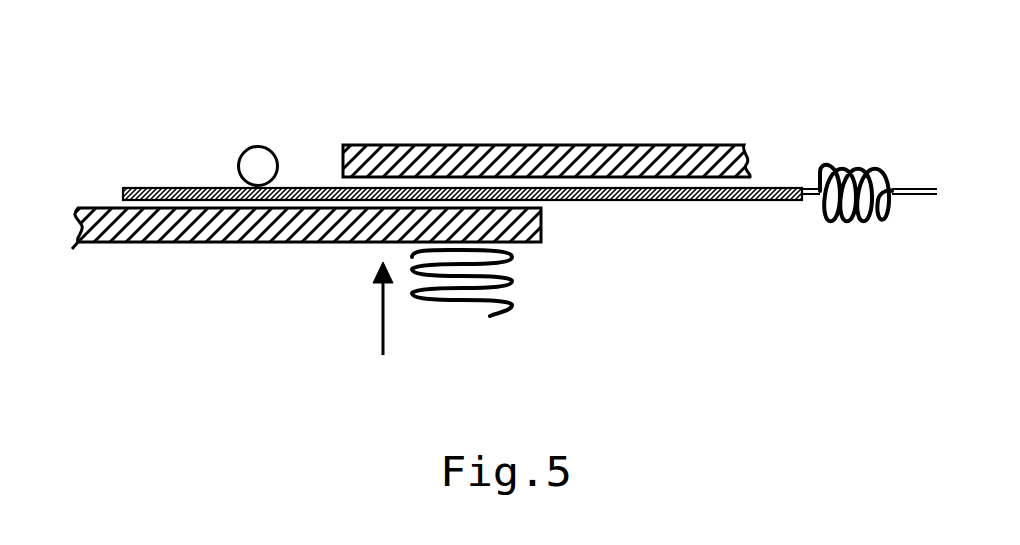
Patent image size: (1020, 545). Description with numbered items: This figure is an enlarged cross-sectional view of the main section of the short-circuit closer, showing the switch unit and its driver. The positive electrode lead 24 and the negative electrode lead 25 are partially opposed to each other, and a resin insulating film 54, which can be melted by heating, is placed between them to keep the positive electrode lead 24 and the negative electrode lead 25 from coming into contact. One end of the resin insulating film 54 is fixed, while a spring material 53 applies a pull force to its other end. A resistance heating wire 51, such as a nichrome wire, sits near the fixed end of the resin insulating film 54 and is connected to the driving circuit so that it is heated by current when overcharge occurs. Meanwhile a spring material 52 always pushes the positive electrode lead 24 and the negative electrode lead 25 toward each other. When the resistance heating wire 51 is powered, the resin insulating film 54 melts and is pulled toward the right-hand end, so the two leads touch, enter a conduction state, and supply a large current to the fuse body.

The positive electrode lead 24 is at (708, 150).
The negative electrode lead 25 is at (122, 240).
The resistance heating wire 51 is at (264, 145).
The spring material 52 is at (467, 313).
The spring material 53 is at (863, 238).
The resin insulating film 54 is at (152, 187).